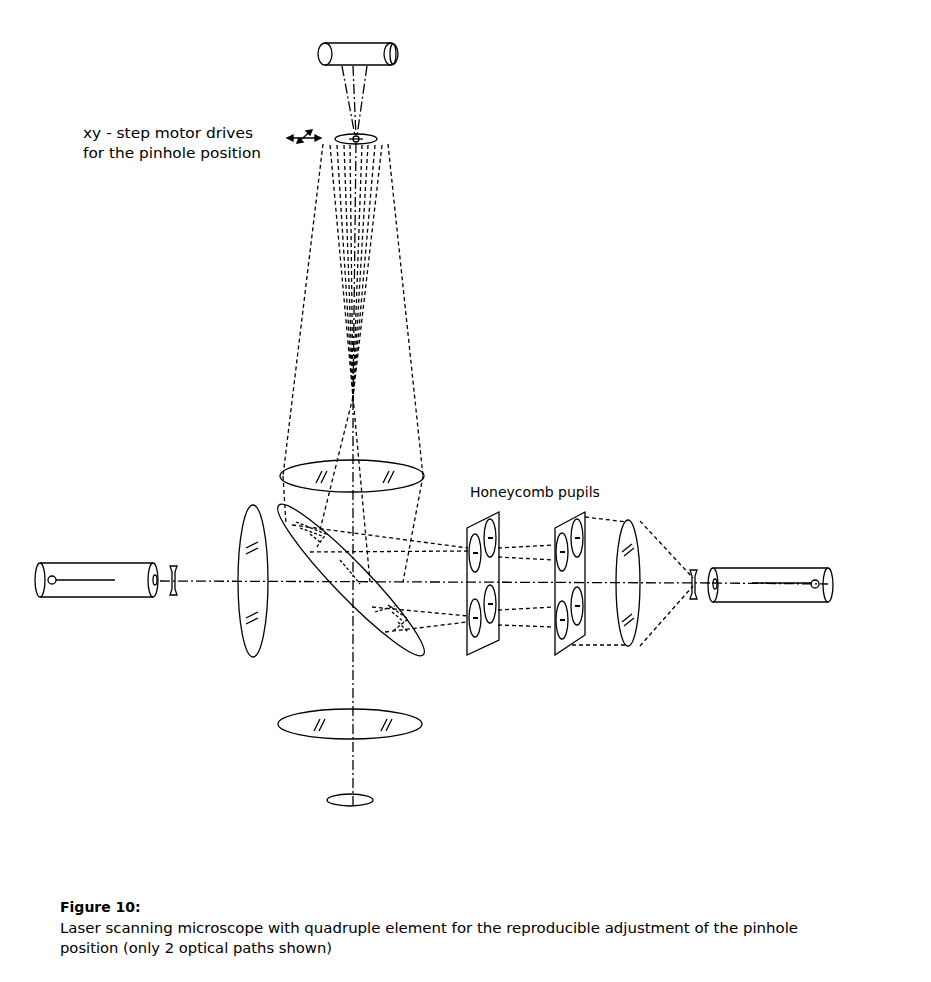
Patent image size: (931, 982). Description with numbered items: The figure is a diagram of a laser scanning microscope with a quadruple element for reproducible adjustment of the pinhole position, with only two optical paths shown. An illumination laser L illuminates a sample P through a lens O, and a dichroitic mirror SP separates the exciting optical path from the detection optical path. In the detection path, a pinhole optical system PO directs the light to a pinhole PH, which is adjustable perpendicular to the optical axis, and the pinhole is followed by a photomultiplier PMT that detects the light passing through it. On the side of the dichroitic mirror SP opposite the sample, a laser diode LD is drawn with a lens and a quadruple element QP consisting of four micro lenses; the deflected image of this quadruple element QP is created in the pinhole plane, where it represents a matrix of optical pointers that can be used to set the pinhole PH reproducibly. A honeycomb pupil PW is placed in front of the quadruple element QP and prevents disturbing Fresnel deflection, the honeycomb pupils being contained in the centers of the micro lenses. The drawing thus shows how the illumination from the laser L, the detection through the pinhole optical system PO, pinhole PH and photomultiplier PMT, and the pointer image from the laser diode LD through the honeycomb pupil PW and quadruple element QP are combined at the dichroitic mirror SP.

The photomultiplier PMT is at (350, 71).
The pinhole PH is at (558, 140).
The pinhole optical system PO is at (331, 474).
The lens O is at (328, 595).
The dichroitic mirror SP is at (333, 598).
The honeycomb pupil PW is at (486, 594).
The quadruple element QP is at (565, 594).
The laser diode (RGB) LD is at (761, 605).
The laser L is at (106, 594).
The sample P is at (362, 800).